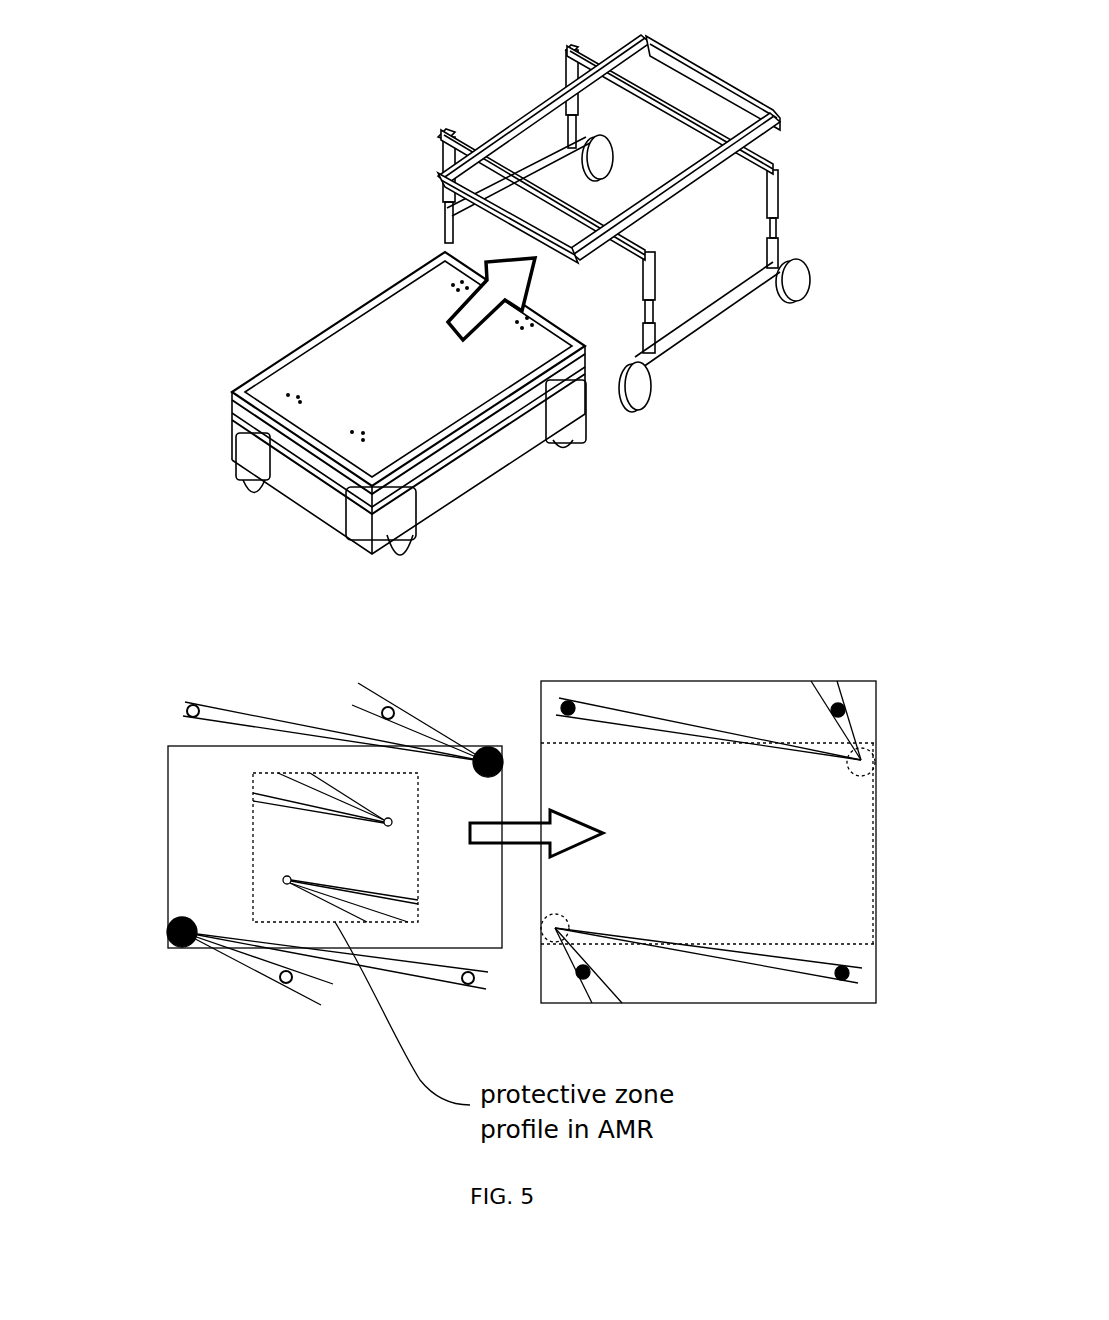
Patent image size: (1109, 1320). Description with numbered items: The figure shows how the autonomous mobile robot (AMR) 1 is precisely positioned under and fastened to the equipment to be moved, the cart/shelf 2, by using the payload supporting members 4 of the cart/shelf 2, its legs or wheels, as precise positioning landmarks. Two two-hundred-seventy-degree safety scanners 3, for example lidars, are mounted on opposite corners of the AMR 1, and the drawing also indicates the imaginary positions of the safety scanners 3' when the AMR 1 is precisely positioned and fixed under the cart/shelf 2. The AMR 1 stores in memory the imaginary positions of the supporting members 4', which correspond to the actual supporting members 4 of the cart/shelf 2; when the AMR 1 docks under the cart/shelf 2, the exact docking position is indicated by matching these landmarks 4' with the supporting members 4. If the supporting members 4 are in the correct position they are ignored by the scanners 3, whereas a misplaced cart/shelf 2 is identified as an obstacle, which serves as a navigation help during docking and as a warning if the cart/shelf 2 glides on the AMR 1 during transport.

The autonomous mobile robot (AMR) 1 is at (208, 838).
The cart/shelf 2 is at (761, 680).
The safety scanners 3 is at (317, 844).
The imaginary positions of the safety scanners 3' is at (735, 842).
The supporting members 4 is at (734, 845).
The imaginary positions of the supporting members 4' is at (361, 849).